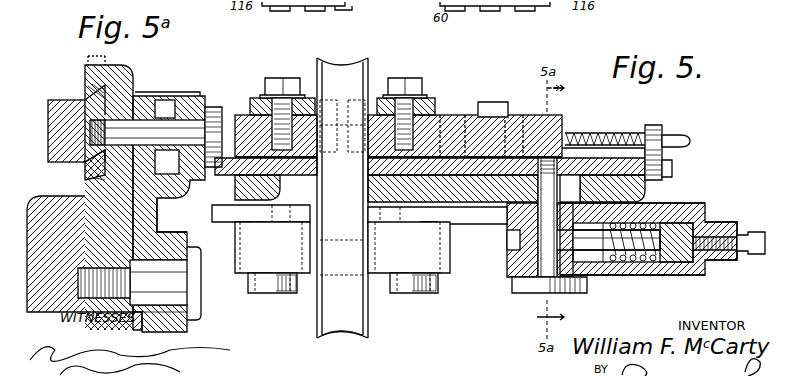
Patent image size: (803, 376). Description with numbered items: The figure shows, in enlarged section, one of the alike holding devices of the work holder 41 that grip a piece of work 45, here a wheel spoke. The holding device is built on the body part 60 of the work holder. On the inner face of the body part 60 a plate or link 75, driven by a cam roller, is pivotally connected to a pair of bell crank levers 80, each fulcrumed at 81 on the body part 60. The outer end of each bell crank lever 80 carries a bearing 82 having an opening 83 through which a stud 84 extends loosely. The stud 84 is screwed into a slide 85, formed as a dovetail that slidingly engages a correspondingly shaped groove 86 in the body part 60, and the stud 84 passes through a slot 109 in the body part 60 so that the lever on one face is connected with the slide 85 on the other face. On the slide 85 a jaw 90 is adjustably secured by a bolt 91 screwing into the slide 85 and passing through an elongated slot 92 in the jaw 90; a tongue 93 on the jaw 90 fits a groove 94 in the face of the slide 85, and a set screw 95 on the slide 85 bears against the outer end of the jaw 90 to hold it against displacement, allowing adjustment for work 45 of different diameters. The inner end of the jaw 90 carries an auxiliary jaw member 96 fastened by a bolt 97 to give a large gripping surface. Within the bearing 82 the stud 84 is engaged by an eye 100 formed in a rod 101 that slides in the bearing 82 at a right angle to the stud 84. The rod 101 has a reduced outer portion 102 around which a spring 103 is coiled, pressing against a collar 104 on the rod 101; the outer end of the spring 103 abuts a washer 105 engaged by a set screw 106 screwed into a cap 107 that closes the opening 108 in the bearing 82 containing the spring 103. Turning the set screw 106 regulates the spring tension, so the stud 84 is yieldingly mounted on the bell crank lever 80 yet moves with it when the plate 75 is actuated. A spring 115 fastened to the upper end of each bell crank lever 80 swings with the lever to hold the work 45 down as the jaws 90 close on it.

In FIG. 5A, the work holder 41 is at (48, 55).
In FIG. 5, the work holder 41 is at (448, 308).
In FIG. 5, the work 45 is at (317, 312).
In FIG. 5A, the body part 60 is at (128, 68).
In FIG. 5, the body part 60 is at (652, 191).
In FIG. 5, the plate or link 75 is at (382, 268).
In FIG. 5A, the bell crank lever 80 is at (178, 334).
In FIG. 5, the bell crank lever 80 is at (472, 224).
In FIG. 5A, the fulcrum 81 is at (198, 278).
In FIG. 5A, the bearing 82 is at (172, 215).
In FIG. 5, the bearing 82 is at (622, 276).
In FIG. 5, the opening 83 is at (509, 266).
In FIG. 5A, the stud 84 is at (165, 125).
In FIG. 5, the stud 84 is at (544, 282).
In FIG. 5A, the slide 85 is at (92, 92).
In FIG. 5, the slide 85 is at (236, 178).
In FIG. 5A, the groove 86 is at (86, 181).
In FIG. 5, the groove 86 is at (235, 218).
In FIG. 5A, the jaw 90 is at (50, 130).
In FIG. 5, the jaw 90 is at (242, 115).
In FIG. 5, the bolt 91 is at (495, 102).
In FIG. 5, the elongated slot 92 is at (512, 125).
In FIG. 5A, the tongue 93 is at (92, 138).
In FIG. 5, the tongue 93 is at (300, 170).
In FIG. 5A, the groove 94 is at (90, 124).
In FIG. 5, the groove 94 is at (628, 158).
In FIG. 5, the set screw 95 is at (652, 125).
In FIG. 5, the auxiliary jaw member 96 is at (308, 98).
In FIG. 5, the bolt 97 is at (278, 78).
In FIG. 5A, the eye 100 is at (162, 98).
In FIG. 5, the eye 100 is at (509, 241).
In FIG. 5, the rod 101 is at (592, 278).
In FIG. 5, the reduced outer portion 102 is at (672, 262).
In FIG. 5, the spring 103 is at (675, 222).
In FIG. 5, the collar 104 is at (615, 262).
In FIG. 5, the washer 105 is at (690, 262).
In FIG. 5, the set screw 106 is at (745, 234).
In FIG. 5, the cap 107 is at (722, 222).
In FIG. 5, the opening 108 is at (640, 262).
In FIG. 5, the slot 109 is at (572, 188).
In FIG. 5A, the spring 115 is at (190, 94).